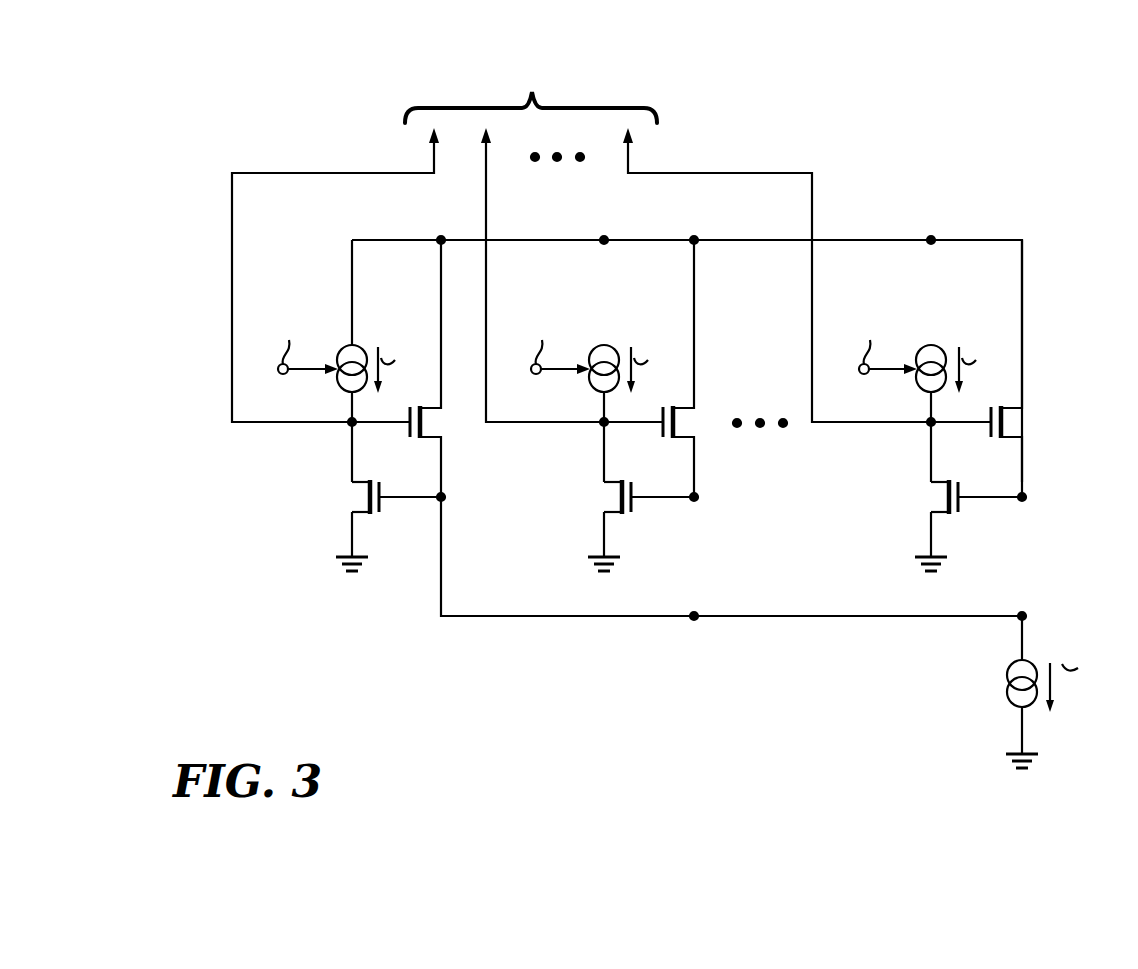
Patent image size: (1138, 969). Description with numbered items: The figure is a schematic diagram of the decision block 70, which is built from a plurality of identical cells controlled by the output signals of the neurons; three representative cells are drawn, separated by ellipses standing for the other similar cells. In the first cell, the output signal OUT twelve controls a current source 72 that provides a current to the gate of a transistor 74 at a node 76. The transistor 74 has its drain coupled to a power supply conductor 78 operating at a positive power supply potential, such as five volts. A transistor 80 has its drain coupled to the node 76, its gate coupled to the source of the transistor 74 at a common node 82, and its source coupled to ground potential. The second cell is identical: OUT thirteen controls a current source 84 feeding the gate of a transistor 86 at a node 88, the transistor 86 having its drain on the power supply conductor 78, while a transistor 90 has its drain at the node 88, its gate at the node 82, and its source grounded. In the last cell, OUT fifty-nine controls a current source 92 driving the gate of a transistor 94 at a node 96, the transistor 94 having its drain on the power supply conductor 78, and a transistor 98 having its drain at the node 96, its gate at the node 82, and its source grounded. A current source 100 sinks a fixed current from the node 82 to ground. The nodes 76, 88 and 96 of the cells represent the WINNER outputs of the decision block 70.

The decision block 70 is at (486, 676).
The current source 72 is at (344, 395).
The transistor 74 is at (430, 421).
The node 76 is at (349, 428).
The power supply conductor 78 is at (537, 238).
The transistor 80 is at (357, 500).
The node 82 is at (694, 620).
The current source 84 is at (591, 395).
The transistor 86 is at (686, 421).
The node 88 is at (601, 428).
The transistor 90 is at (610, 500).
The current source 92 is at (918, 395).
The transistor 94 is at (1013, 421).
The node 96 is at (928, 428).
The transistor 98 is at (937, 500).
The current source 100 is at (1004, 700).